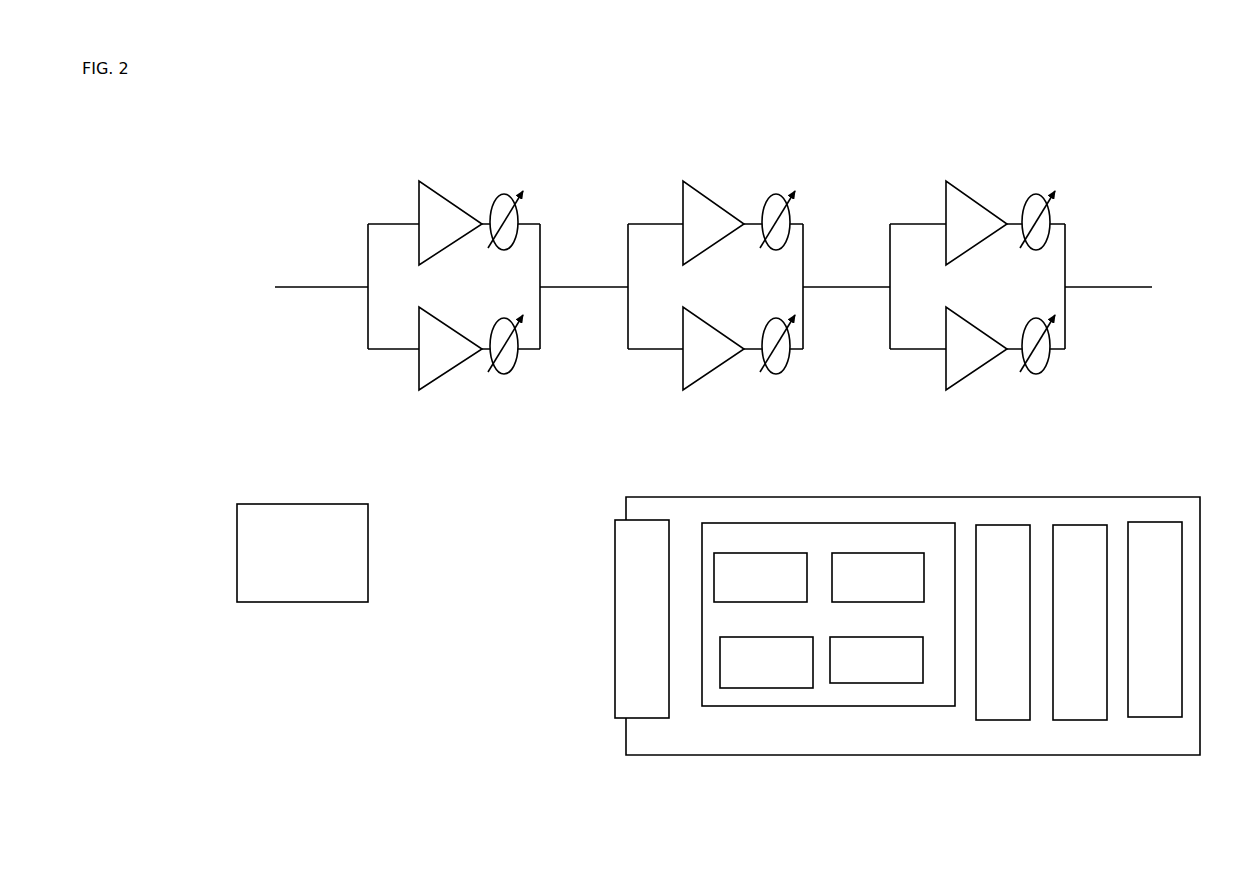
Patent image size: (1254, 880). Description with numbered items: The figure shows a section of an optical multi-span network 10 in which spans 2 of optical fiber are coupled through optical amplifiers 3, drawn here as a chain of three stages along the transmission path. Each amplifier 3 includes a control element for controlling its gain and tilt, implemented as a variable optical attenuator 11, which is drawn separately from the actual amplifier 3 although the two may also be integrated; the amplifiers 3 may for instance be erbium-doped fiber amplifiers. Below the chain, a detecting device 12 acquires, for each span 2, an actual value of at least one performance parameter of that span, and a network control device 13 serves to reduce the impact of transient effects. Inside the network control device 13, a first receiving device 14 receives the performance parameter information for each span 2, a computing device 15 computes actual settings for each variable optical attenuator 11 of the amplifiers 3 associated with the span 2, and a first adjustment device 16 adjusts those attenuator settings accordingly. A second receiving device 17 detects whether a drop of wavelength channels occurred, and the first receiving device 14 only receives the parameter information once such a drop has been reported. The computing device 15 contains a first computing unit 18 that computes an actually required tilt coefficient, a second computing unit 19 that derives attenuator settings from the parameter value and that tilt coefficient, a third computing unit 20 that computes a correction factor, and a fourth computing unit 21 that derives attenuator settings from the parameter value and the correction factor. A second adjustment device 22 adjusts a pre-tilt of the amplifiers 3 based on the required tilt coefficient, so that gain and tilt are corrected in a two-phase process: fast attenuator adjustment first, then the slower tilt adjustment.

The span 2 is at (323, 278).
The amplifier 3 is at (453, 183).
The section of an optical multi-span network 10 is at (852, 136).
The variable optical attenuator 11 is at (506, 190).
The detecting device 12 is at (278, 501).
The network control device 13 is at (1137, 496).
The first receiving device 14 is at (613, 670).
The computing device 15 is at (722, 519).
The first adjustment device 16 is at (1004, 519).
The second receiving device 17 is at (1076, 519).
The first computing unit 18 is at (778, 550).
The second computing unit 19 is at (719, 663).
The third computing unit 20 is at (861, 550).
The fourth computing unit 21 is at (835, 629).
The second adjustment device 22 is at (1173, 518).